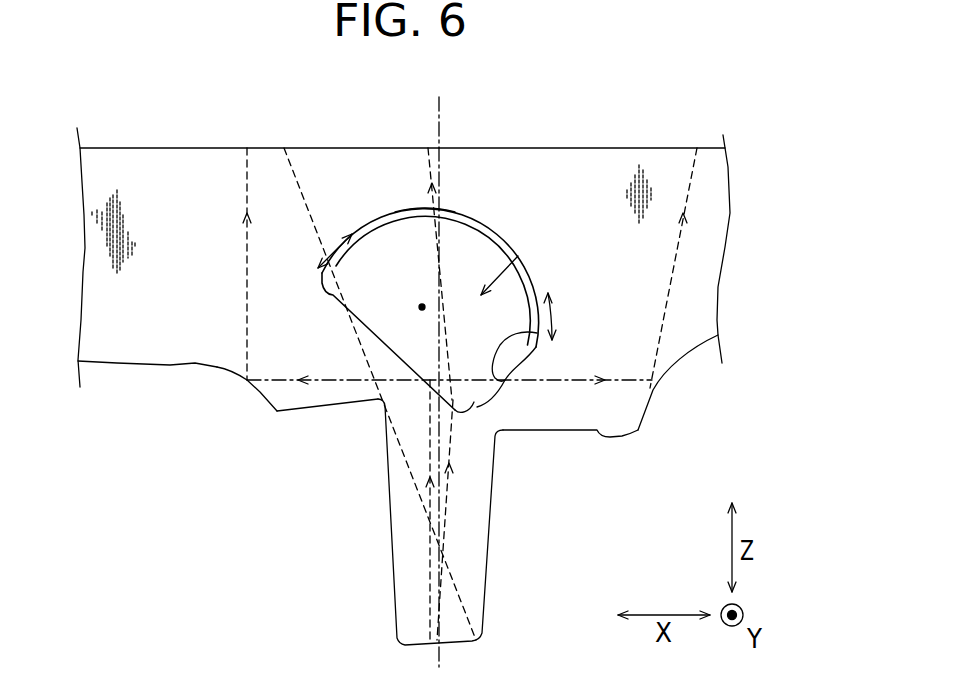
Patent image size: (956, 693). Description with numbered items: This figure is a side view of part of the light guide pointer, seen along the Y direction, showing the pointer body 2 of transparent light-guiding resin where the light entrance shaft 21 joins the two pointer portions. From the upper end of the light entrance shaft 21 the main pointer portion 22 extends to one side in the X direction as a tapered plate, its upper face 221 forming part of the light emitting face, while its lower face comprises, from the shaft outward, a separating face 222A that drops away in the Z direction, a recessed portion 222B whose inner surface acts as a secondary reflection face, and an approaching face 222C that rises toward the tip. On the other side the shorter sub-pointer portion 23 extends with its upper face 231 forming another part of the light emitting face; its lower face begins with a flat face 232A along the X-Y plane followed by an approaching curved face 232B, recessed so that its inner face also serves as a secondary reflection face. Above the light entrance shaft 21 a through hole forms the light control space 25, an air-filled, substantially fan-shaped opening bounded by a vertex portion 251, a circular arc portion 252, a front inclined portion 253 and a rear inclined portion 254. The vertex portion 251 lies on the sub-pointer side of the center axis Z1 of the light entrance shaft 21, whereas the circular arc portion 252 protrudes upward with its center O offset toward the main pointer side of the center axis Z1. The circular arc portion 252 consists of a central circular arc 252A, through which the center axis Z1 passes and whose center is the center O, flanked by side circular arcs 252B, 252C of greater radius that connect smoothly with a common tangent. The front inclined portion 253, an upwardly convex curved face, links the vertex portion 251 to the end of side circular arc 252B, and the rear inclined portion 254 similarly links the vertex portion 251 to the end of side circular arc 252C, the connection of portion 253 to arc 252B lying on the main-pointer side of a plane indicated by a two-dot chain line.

The pointer body 2 is at (650, 108).
The light entrance shaft 21 is at (470, 560).
The main pointer portion 22 is at (117, 158).
The upper face 221 is at (172, 148).
The separating face 222A is at (315, 411).
The recessed portion 222B is at (233, 374).
The approaching face 222C is at (117, 364).
The sub-pointer portion 23 is at (717, 177).
The upper face 231 is at (668, 148).
The flat face 232A is at (548, 431).
The approaching curved face 232B is at (655, 392).
The light control space 25 is at (517, 251).
The vertex portion 251 is at (492, 462).
The circular arc portion 252 is at (482, 246).
The central circular arc 252A is at (407, 212).
The side circular arc 252B is at (328, 258).
The side circular arc 252C is at (555, 316).
The front inclined portion 253 is at (376, 327).
The rear inclined portion 254 is at (557, 338).
The center of the circular arc portion O is at (420, 305).
The center axis Z1 is at (443, 108).